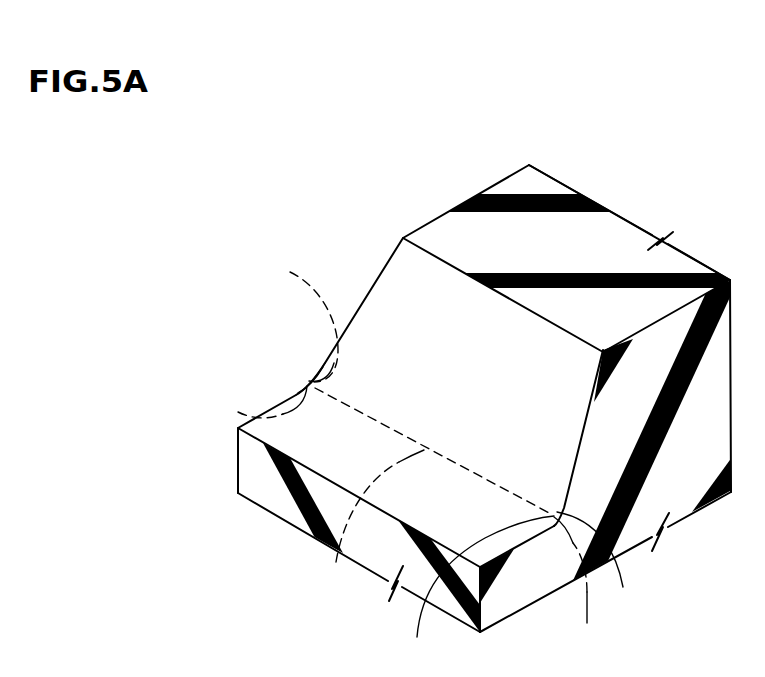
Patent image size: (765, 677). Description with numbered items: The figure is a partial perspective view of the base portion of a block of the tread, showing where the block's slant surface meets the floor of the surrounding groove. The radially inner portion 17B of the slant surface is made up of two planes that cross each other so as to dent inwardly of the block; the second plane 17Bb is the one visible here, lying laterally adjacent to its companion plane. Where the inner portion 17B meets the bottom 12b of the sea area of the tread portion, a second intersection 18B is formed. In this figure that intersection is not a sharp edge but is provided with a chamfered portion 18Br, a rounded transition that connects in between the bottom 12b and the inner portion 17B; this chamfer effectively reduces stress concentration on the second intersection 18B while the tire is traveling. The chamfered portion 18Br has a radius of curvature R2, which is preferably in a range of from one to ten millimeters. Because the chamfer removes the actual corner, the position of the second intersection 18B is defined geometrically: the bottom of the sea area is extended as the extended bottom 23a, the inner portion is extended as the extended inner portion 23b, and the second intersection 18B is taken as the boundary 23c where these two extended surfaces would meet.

The bottom of the sea area 12b is at (340, 447).
The radially inner portion 17B is at (410, 312).
The second plane 17Bb is at (464, 373).
The second intersection 18B is at (336, 562).
The chamfered portion 18Br is at (306, 376).
The extended bottom of the sea area 23a is at (426, 452).
The extended inner portion 23b is at (238, 412).
The boundary 23c is at (434, 451).
The radius of curvature R2 is at (305, 373).